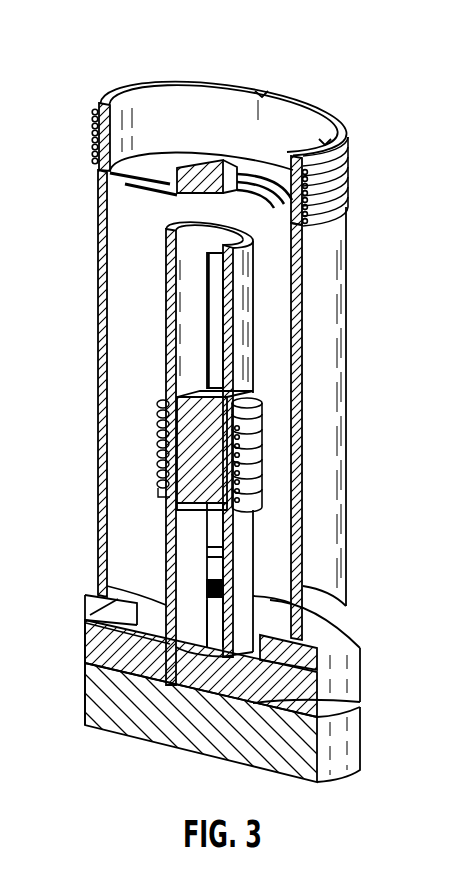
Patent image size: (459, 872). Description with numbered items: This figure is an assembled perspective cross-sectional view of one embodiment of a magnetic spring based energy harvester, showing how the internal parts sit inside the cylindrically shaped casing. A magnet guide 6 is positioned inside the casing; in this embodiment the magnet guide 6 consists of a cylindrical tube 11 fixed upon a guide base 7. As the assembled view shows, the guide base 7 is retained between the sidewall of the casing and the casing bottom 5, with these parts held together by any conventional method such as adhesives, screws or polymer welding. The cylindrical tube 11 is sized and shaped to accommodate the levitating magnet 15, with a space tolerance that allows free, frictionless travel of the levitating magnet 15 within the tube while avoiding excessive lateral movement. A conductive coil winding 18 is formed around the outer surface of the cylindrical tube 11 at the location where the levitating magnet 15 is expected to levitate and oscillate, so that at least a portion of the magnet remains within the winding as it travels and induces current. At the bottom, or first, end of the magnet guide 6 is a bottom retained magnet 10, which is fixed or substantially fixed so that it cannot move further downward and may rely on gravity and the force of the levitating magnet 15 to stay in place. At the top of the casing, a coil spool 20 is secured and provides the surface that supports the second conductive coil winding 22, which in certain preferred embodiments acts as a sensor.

The casing bottom 5 is at (97, 683).
The magnet guide 6 is at (240, 347).
The guide base 7 is at (97, 640).
The bottom retained magnet 10 is at (217, 657).
The cylindrical tube 11 is at (173, 347).
The levitating magnet 15 is at (198, 470).
The conductive coil winding 18 is at (248, 455).
The coil spool 20 is at (332, 118).
The second conductive coil winding 22 is at (335, 168).